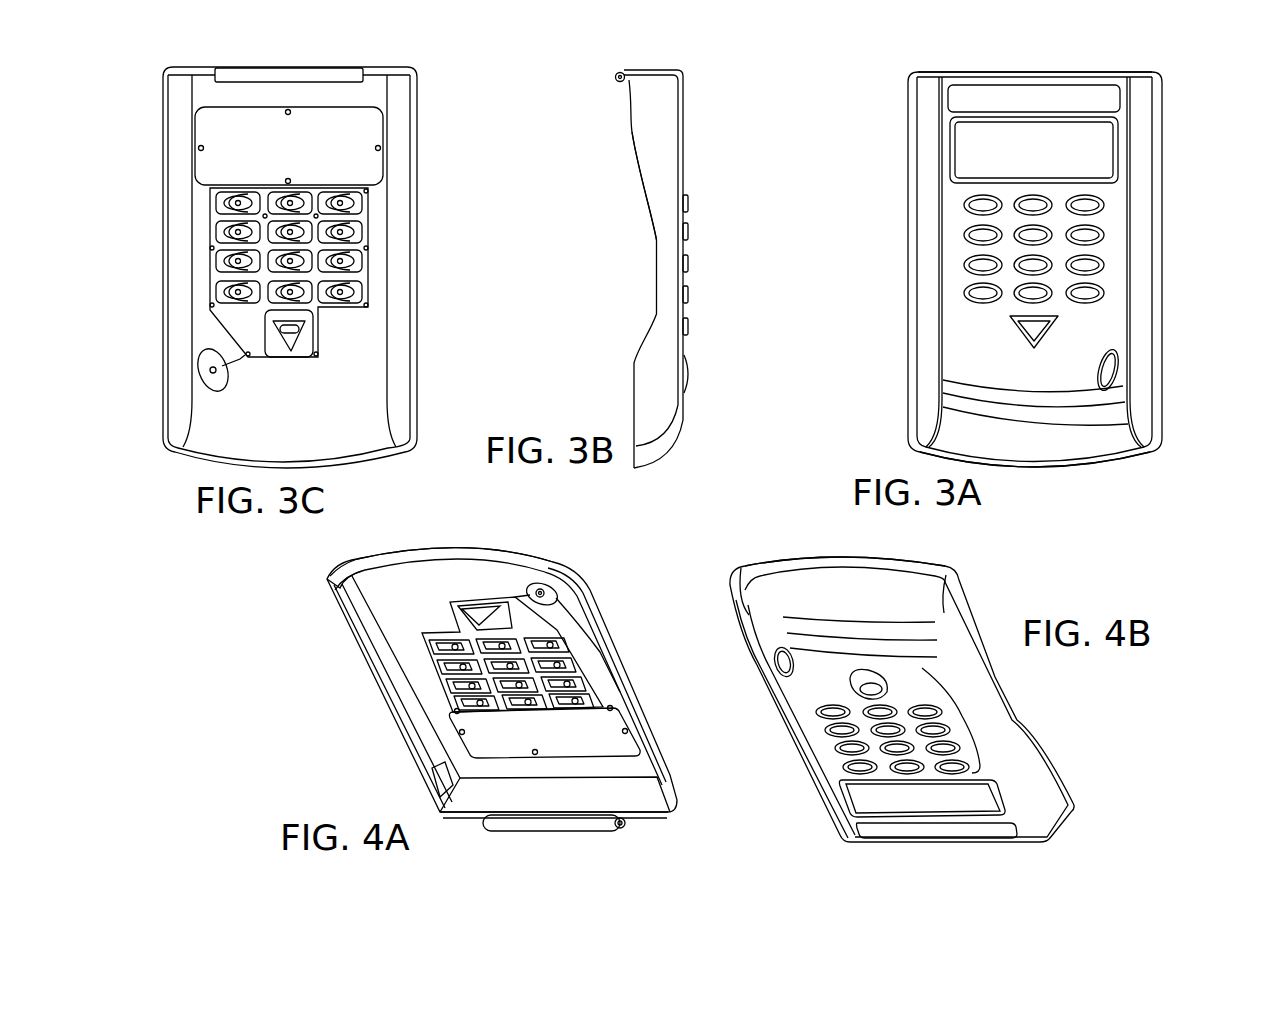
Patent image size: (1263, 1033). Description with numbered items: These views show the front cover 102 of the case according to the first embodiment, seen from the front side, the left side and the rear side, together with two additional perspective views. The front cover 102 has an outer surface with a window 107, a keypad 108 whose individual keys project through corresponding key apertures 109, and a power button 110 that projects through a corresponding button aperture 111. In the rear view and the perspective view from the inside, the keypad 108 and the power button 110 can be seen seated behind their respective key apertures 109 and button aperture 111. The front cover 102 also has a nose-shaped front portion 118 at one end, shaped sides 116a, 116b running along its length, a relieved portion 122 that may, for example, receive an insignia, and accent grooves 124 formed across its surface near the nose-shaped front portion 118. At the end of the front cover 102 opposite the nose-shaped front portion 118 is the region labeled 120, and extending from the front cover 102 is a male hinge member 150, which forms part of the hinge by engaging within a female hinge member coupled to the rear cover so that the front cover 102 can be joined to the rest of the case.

In FIG. 3C, the front cover 102 is at (440, 71).
In FIG. 3B, the front cover 102 is at (715, 80).
In FIG. 3A, the front cover 102 is at (1181, 102).
In FIG. 4A, the front cover 102 is at (611, 596).
In FIG. 4B, the front cover 102 is at (988, 596).
In FIG. 3C, the window 107 is at (301, 162).
In FIG. 3A, the window 107 is at (1052, 163).
In FIG. 4A, the window 107 is at (556, 752).
In FIG. 4B, the window 107 is at (940, 813).
In FIG. 3C, the keypad 108 is at (360, 272).
In FIG. 3B, the keypad 108 is at (692, 193).
In FIG. 3A, the keypad 108 is at (1109, 268).
In FIG. 4A, the keypad 108 is at (512, 645).
In FIG. 4B, the keypad 108 is at (963, 721).
In FIG. 3C, the key apertures 109 is at (367, 353).
In FIG. 3A, the key apertures 109 is at (1112, 267).
In FIG. 4A, the key apertures 109 is at (511, 674).
In FIG. 4B, the key apertures 109 is at (963, 717).
In FIG. 3C, the power button 110 is at (178, 361).
In FIG. 3B, the power button 110 is at (688, 370).
In FIG. 3A, the power button 110 is at (1035, 386).
In FIG. 4B, the power button 110 is at (854, 626).
In FIG. 3C, the button aperture 111 is at (210, 356).
In FIG. 3A, the button aperture 111 is at (1098, 378).
In FIG. 4B, the button aperture 111 is at (783, 648).
In FIG. 3B, the shaped side 116a is at (651, 169).
In FIG. 3A, the shaped side 116a is at (908, 282).
In FIG. 4A, the shaped side 116a is at (645, 700).
In FIG. 4B, the shaped side 116a is at (1040, 742).
In FIG. 3A, the shaped side 116b is at (1155, 290).
In FIG. 4A, the shaped side 116b is at (400, 728).
In FIG. 3B, the nose-shaped front portion 118 is at (661, 452).
In FIG. 3A, the nose-shaped front portion 118 is at (1102, 452).
In FIG. 4A, the nose-shaped front portion 118 is at (470, 553).
In FIG. 4B, the nose-shaped front portion 118 is at (800, 572).
In FIG. 3C, the bottom end 120 is at (203, 67).
In FIG. 3A, the bottom end 120 is at (1073, 72).
In FIG. 4A, the bottom end 120 is at (640, 818).
In FIG. 3A, the relieved portion 122 is at (967, 85).
In FIG. 4B, the relieved portion 122 is at (917, 836).
In FIG. 3B, the accent grooves 124 is at (661, 431).
In FIG. 3A, the accent grooves 124 is at (1130, 338).
In FIG. 4B, the accent grooves 124 is at (748, 612).
In FIG. 3B, the male hinge member 150 is at (624, 72).
In FIG. 4A, the male hinge member 150 is at (548, 825).